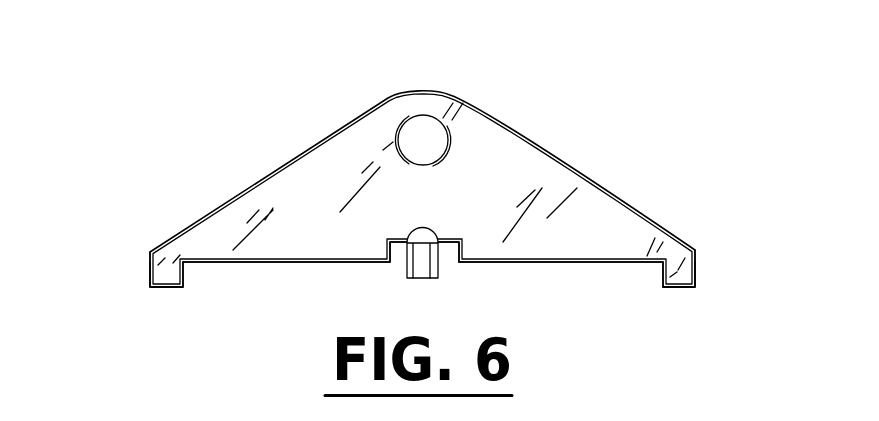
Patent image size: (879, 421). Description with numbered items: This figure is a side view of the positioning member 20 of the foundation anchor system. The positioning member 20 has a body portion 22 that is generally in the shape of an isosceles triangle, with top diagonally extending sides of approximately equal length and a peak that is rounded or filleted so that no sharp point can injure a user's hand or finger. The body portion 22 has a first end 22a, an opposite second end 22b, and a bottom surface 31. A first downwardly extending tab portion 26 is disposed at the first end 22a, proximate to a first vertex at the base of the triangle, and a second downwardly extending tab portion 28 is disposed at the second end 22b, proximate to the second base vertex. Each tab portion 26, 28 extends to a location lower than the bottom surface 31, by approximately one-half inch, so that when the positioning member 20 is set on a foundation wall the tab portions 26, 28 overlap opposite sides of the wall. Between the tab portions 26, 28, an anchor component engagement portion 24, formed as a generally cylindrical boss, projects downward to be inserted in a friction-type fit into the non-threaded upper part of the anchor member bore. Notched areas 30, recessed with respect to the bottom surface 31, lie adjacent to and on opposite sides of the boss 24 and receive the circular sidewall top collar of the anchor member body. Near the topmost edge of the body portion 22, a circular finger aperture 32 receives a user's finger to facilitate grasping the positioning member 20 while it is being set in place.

The positioning member 20 is at (257, 172).
The body portion 22 is at (513, 172).
The first end 22a is at (150, 270).
The second end 22b is at (697, 258).
The anchor component engagement portion 24 is at (420, 265).
The first downwardly extending tab portion 26 is at (173, 277).
The second downwardly extending tab portion 28 is at (687, 270).
The notched areas 30 is at (447, 250).
The bottom surface 31 is at (278, 263).
The circular finger aperture 32 is at (422, 138).